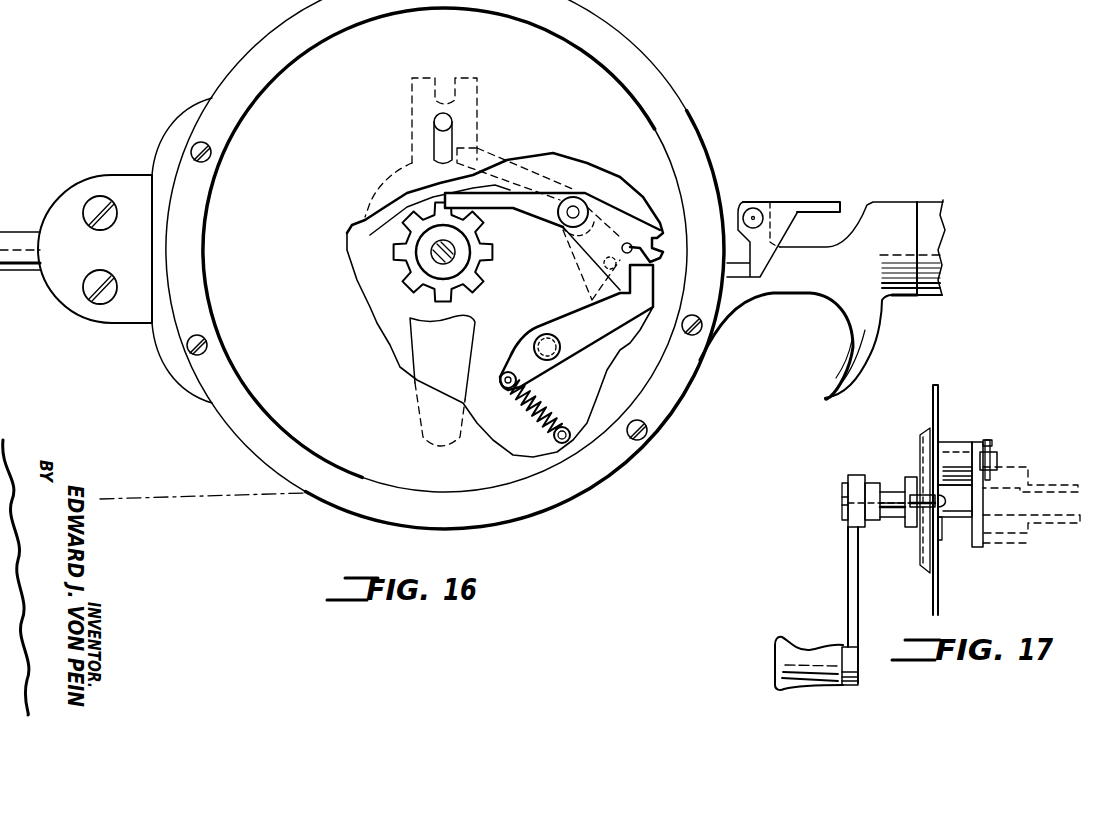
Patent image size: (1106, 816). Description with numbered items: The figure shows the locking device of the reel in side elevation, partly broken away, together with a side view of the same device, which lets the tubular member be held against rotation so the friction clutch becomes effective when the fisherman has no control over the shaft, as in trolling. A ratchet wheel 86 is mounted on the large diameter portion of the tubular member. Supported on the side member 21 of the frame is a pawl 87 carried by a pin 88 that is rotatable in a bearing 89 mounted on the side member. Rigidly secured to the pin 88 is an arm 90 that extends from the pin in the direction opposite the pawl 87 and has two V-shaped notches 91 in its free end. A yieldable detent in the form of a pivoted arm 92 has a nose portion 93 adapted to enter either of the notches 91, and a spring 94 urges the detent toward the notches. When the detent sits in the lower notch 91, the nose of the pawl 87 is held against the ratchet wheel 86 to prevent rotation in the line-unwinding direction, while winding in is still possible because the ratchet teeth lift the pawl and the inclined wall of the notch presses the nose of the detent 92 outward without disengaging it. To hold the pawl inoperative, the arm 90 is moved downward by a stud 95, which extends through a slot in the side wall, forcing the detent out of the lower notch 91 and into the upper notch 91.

In FIG. 16, the side member 21 is at (574, 80).
In FIG. 17, the side member 21 is at (938, 388).
In FIG. 16, the ratchet wheel 86 is at (457, 289).
In FIG. 17, the ratchet wheel 86 is at (980, 525).
In FIG. 16, the pawl 87 is at (532, 209).
In FIG. 17, the pawl 87 is at (990, 442).
In FIG. 16, the pin 88 is at (576, 205).
In FIG. 17, the pin 88 is at (997, 460).
In FIG. 17, the bearing 89 is at (957, 442).
In FIG. 16, the arm 90 is at (590, 238).
In FIG. 17, the arm 90 is at (943, 537).
In FIG. 16, the V-shaped notches 91 is at (662, 236).
In FIG. 16, the pivoted arm 92 is at (612, 330).
In FIG. 16, the nose portion 93 is at (645, 287).
In FIG. 16, the spring 94 is at (540, 420).
In FIG. 16, the stud 95 is at (627, 243).
In FIG. 17, the stud 95 is at (898, 513).